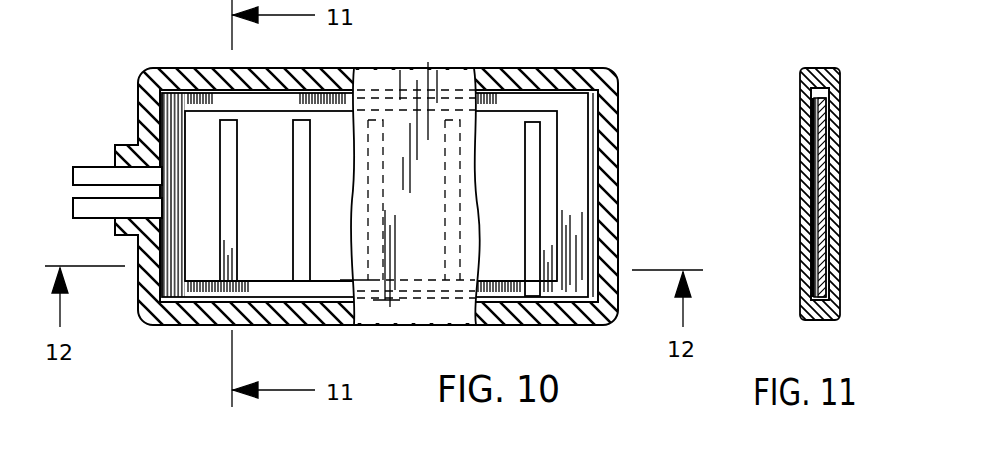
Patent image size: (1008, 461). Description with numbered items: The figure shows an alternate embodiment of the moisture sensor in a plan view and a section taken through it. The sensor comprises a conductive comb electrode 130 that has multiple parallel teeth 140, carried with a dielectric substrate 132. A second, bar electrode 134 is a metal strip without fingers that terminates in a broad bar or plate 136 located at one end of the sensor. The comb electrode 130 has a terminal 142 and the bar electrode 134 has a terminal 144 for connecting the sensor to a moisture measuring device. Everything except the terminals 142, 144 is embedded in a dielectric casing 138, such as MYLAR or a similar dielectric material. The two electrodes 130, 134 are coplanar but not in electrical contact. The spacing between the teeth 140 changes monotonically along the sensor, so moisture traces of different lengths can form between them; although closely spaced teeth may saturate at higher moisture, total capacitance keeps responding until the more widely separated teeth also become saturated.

In FIG. 10, the comb electrode 130 is at (192, 292).
In FIG. 11, the comb electrode 130 is at (810, 210).
In FIG. 11, the dielectric substrate 132 is at (823, 167).
In FIG. 10, the bar electrode 134 is at (208, 100).
In FIG. 11, the bar electrode 134 is at (808, 100).
In FIG. 10, the bar or plate 136 is at (578, 156).
In FIG. 10, the dielectric casing 138 is at (137, 108).
In FIG. 11, the dielectric casing 138 is at (803, 182).
In FIG. 10, the teeth 140 is at (532, 126).
In FIG. 10, the terminal 142 is at (80, 210).
In FIG. 10, the terminal 144 is at (95, 173).